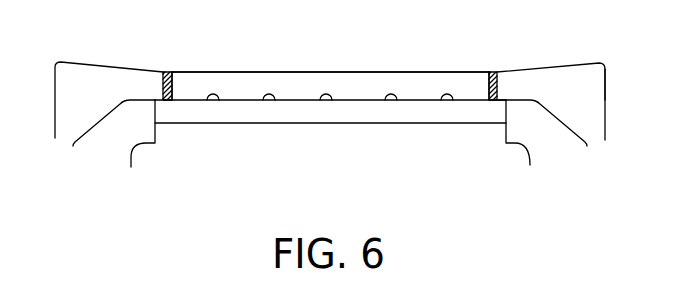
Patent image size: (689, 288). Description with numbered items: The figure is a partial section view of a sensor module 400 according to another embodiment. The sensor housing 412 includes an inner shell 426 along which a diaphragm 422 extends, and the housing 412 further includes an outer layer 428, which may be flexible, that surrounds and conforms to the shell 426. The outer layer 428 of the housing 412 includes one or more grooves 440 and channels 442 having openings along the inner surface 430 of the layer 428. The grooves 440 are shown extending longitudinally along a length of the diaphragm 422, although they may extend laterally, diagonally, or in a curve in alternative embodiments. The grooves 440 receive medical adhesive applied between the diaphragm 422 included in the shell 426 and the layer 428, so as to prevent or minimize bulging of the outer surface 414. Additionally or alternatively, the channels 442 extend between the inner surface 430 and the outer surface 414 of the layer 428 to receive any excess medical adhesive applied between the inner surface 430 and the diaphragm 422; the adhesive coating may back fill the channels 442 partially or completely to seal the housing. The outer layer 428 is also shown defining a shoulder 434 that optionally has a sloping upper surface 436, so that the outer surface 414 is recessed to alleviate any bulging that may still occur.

The sensor module 400 is at (313, 36).
The sensor housing 412 is at (55, 156).
The outer surface 414 is at (392, 72).
The diaphragm 422 is at (355, 113).
The inner shell 426 is at (120, 140).
The outer layer 428 is at (308, 92).
The inner surface 430 is at (294, 102).
The shoulder 434 is at (607, 85).
The sloping upper surface 436 is at (562, 62).
The grooves 440 is at (213, 94).
The channels 442 is at (498, 90).